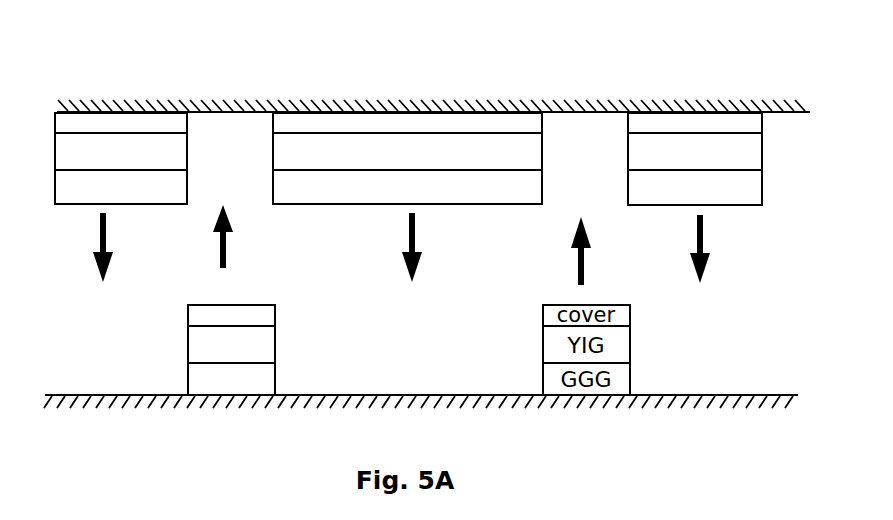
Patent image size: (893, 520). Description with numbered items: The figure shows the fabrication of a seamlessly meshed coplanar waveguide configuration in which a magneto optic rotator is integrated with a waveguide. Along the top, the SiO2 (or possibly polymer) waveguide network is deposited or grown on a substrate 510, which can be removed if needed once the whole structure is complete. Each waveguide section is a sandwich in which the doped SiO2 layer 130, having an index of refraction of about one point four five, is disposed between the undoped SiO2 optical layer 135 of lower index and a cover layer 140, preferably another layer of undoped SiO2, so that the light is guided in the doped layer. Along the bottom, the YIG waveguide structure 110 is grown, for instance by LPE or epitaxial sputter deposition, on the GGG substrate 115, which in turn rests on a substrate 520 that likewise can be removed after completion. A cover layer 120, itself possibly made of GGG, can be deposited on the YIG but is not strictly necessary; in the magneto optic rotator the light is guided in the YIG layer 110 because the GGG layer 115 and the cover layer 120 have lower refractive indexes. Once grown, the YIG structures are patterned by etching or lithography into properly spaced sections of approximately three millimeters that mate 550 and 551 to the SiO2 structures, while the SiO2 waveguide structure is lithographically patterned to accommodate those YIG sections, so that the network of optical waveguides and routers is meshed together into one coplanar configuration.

The magneto-optically active layer 110 is at (277, 350).
The gadolinium gallium garnet layer 115 is at (277, 378).
The cover layer 120 is at (277, 313).
The doped SiO2 layer 130 is at (553, 150).
The undoped SiO2 optical layer 135 is at (625, 183).
The cover layer 140 is at (197, 125).
The substrate 510 is at (255, 92).
The substrate 520 is at (138, 417).
The mating 550 is at (428, 233).
The mating 551 is at (718, 258).